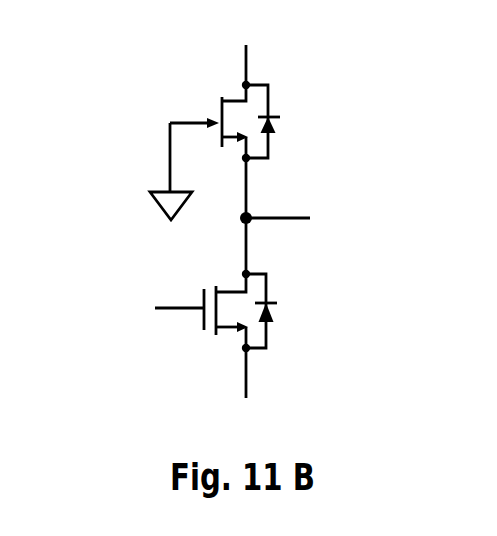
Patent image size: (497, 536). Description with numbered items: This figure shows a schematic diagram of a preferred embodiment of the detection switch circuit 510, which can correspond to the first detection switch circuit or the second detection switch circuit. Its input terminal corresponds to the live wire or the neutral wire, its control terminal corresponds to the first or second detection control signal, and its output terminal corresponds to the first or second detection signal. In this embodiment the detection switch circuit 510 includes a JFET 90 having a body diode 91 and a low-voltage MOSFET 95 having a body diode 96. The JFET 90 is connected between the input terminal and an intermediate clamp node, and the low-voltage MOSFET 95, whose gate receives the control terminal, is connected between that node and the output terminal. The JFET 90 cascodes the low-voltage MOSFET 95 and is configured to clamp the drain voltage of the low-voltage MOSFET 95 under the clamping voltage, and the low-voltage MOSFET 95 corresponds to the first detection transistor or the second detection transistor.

The detection switch circuit 510 is at (118, 112).
The JFET 90 is at (209, 121).
The body diode 91 is at (284, 119).
The low-voltage MOSFET 95 is at (201, 314).
The body diode 96 is at (282, 307).